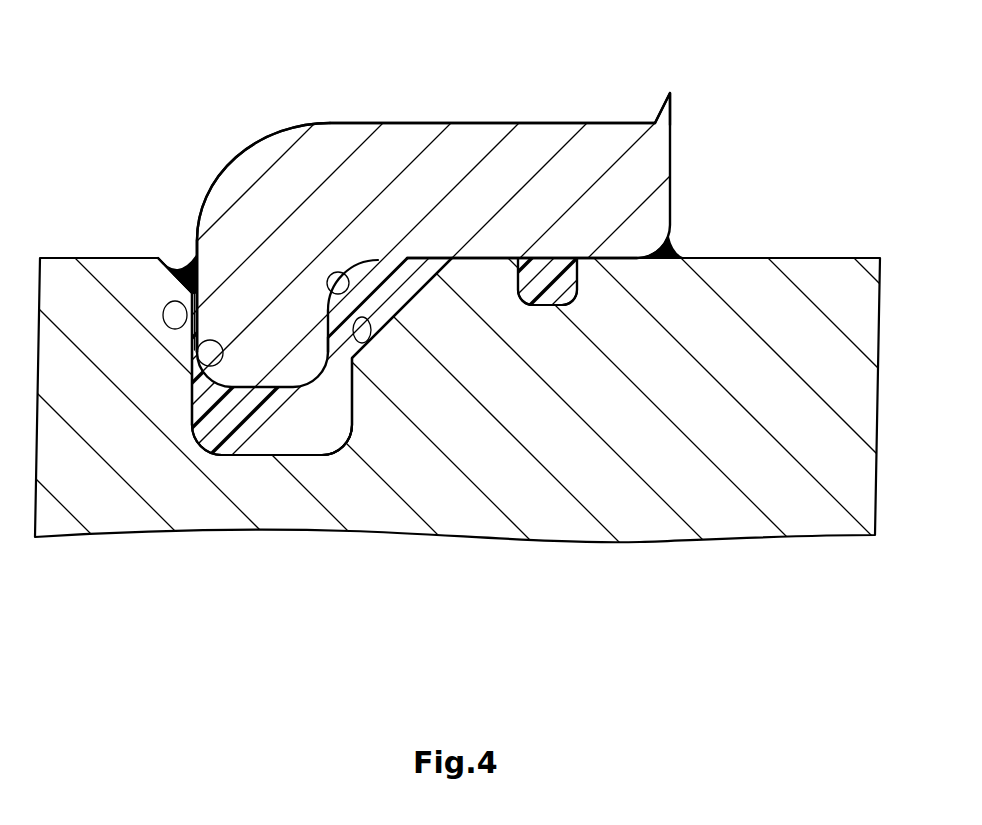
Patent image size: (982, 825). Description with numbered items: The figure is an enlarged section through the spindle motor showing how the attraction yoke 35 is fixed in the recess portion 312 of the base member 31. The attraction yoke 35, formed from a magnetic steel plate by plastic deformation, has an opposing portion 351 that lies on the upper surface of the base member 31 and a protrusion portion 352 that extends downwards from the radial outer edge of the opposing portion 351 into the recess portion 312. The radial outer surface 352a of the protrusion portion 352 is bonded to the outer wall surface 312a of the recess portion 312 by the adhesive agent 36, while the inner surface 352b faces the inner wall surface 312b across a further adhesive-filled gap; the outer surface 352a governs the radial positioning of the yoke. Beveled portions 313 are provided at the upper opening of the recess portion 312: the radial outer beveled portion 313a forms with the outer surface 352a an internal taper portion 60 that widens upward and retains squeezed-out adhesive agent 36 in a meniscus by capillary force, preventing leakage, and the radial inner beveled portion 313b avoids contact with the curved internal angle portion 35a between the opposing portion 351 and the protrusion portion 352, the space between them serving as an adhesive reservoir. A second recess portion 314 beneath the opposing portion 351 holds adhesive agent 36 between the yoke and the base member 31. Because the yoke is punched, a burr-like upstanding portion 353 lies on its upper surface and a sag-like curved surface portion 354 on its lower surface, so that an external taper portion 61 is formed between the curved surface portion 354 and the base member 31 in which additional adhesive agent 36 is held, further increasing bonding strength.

The base member 31 is at (668, 527).
The attraction yoke 35 is at (552, 63).
The opposing portion 351 is at (538, 135).
The protrusion portion 352 is at (288, 310).
The radial outer surface 352a is at (197, 310).
The inner surface 352b is at (328, 343).
The upstanding portion 353 is at (665, 102).
The curved surface portion 354 is at (652, 262).
The internal angle portion 35a is at (380, 268).
The adhesive agent 36 is at (222, 455).
The recess portion 312 is at (297, 435).
The outer wall surface 312a is at (192, 370).
The inner wall surface 312b is at (353, 408).
The beveled portions 313 is at (167, 252).
The radial outer beveled portion 313a is at (193, 325).
The radial inner beveled portion 313b is at (420, 283).
The second recess portion 314 is at (555, 280).
The internal taper portion 60 is at (180, 257).
The external taper portion 61 is at (687, 240).